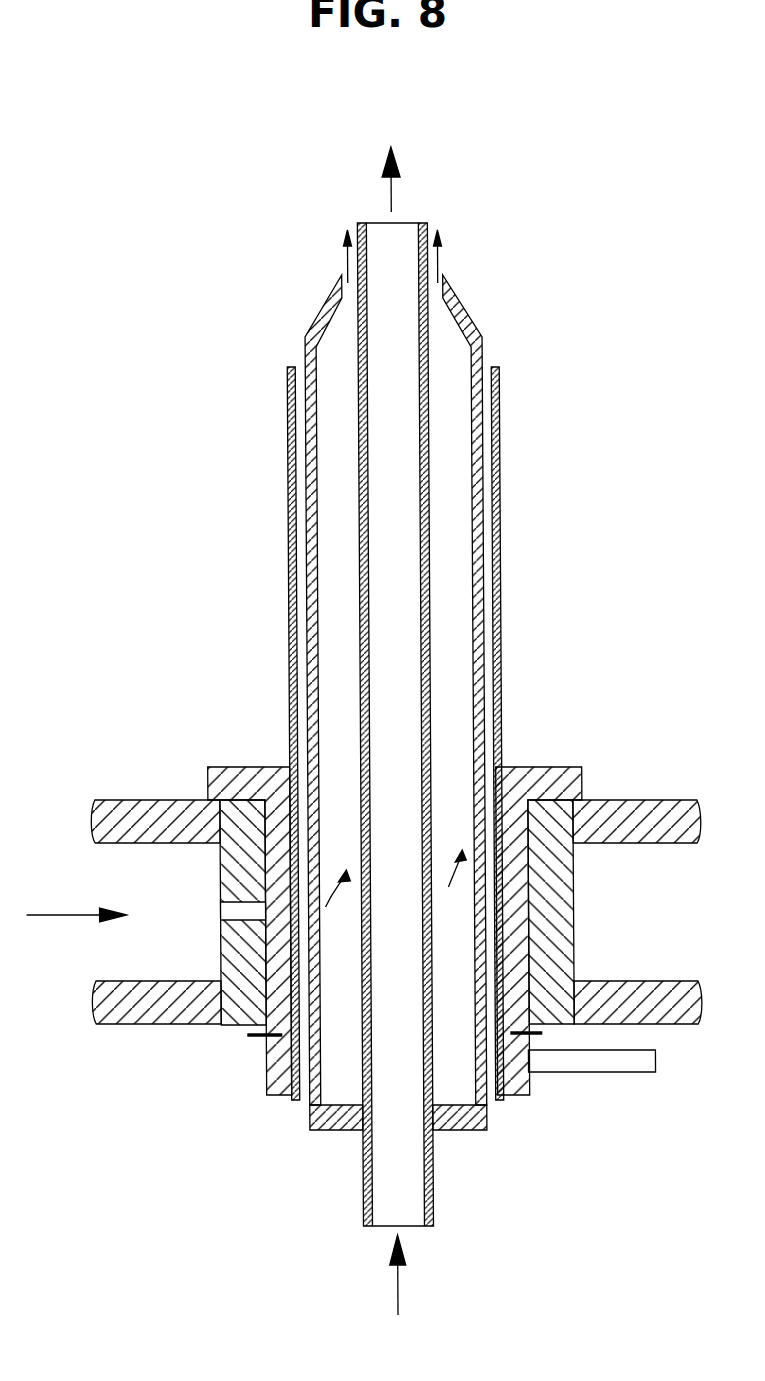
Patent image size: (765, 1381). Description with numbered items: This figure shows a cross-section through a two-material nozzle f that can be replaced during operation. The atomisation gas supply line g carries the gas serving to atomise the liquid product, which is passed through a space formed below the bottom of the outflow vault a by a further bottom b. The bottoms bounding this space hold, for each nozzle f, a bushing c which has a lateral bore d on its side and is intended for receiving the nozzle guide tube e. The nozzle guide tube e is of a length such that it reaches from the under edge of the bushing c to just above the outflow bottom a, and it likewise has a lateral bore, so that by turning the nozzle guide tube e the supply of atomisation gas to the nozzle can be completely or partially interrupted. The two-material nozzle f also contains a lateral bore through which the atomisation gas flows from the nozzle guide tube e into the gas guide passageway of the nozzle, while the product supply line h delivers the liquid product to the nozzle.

The bottom of the outflow vault a is at (678, 805).
The further bottom b is at (677, 973).
The bushing c is at (557, 905).
The lateral bore d is at (214, 921).
The nozzle guide tube e is at (497, 733).
The two-material nozzle f is at (466, 1125).
The atomisation gas supply line g is at (438, 257).
The product supply line h is at (392, 1275).